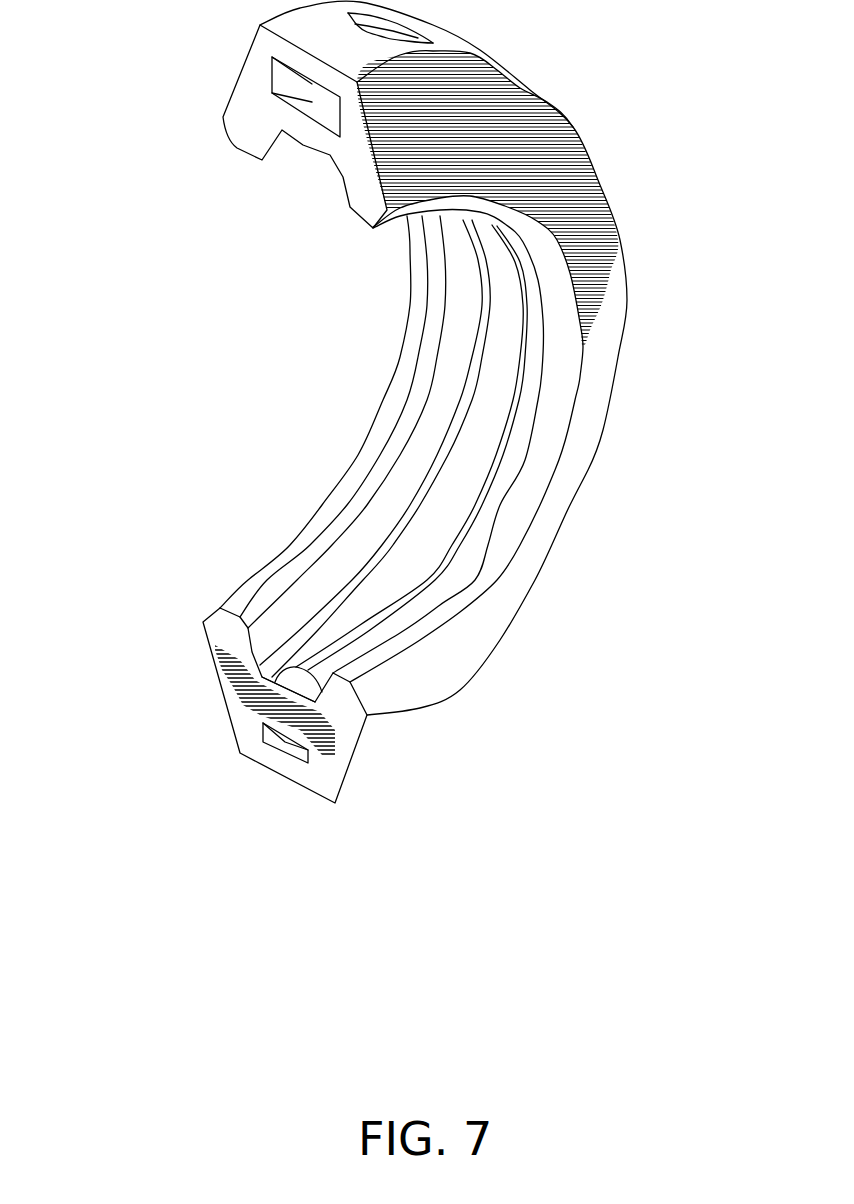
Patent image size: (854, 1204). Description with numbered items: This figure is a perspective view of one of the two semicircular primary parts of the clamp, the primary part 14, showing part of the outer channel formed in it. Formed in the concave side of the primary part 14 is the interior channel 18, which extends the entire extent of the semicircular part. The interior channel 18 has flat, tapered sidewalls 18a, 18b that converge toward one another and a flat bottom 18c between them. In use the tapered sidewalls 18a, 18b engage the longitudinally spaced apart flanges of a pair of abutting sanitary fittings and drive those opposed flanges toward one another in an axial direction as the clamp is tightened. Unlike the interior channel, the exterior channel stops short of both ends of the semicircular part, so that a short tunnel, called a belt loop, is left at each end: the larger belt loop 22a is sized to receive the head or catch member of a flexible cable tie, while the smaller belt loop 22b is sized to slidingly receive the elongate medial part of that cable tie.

The primary part 14 is at (580, 120).
The interior channel 18 is at (470, 466).
The tapered sidewall 18a is at (255, 643).
The tapered sidewall 18b is at (262, 698).
The flat bottom 18c is at (395, 585).
The belt loop 22a is at (317, 103).
The belt loop 22b is at (277, 747).